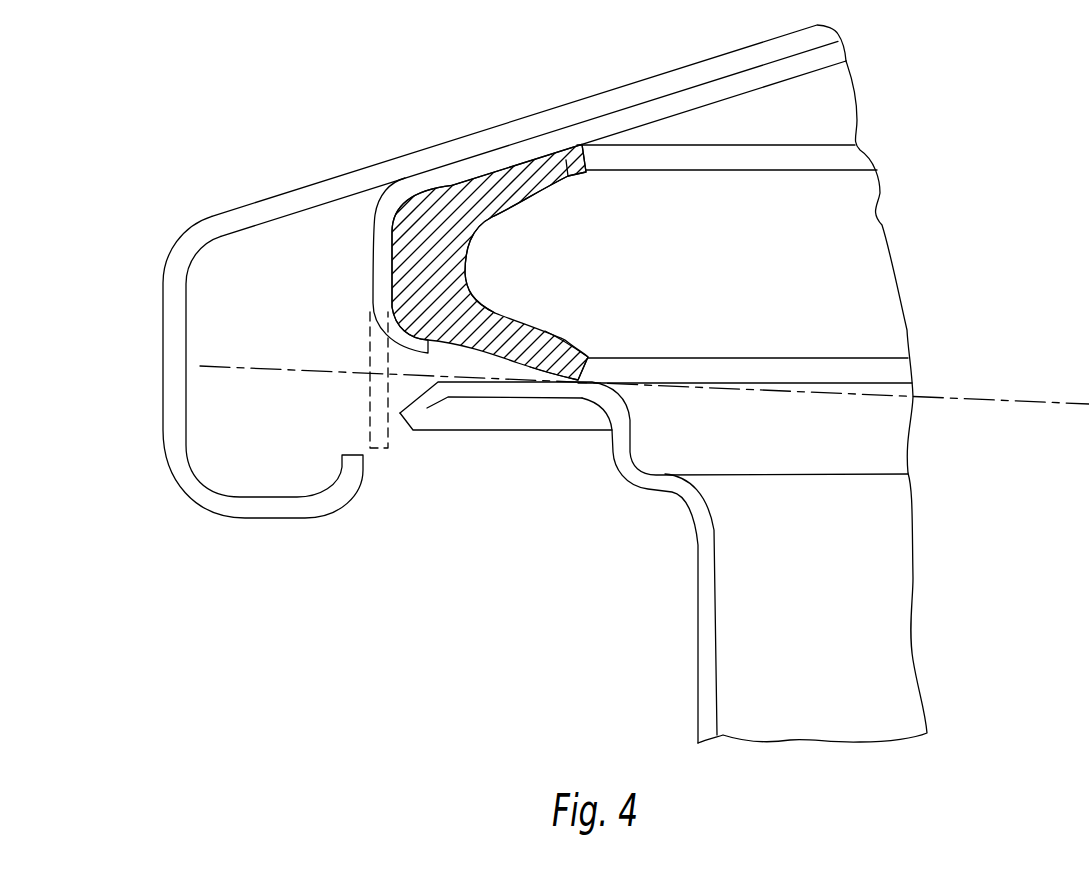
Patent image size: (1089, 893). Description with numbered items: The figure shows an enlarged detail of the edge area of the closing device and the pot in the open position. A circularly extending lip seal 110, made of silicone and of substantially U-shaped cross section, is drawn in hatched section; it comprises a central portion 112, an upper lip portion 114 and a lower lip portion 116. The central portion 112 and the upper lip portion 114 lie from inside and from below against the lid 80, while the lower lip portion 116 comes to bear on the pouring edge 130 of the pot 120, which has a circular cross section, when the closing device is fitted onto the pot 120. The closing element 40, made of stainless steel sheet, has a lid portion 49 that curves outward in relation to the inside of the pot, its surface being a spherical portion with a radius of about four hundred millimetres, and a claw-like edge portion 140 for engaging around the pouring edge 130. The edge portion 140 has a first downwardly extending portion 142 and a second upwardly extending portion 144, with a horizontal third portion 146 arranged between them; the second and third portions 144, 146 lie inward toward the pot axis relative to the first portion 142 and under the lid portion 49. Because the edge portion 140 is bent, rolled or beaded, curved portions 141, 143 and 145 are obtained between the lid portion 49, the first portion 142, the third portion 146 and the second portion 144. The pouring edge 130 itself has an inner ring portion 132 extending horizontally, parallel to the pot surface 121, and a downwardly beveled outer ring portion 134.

The closing element 40 is at (485, 143).
The lid portion 49 is at (340, 185).
The lid 80 is at (592, 127).
The lip seal 110 is at (487, 300).
The central portion 112 is at (463, 252).
The upper lip portion 114 is at (572, 168).
The lower lip portion 116 is at (577, 340).
The pot 120 is at (700, 556).
The pot surface 121 is at (993, 403).
The pouring edge 130 is at (556, 405).
The inner ring portion 132 is at (526, 388).
The outer ring portion 134 is at (427, 410).
The claw-like edge portion 140 is at (162, 272).
The curved portion 141 is at (190, 246).
The first downwardly extending portion 142 is at (177, 377).
The curved portion 143 is at (197, 483).
The second upwardly extending portion 144 is at (350, 467).
The curved portion 145 is at (337, 493).
The third portion 146 is at (276, 507).